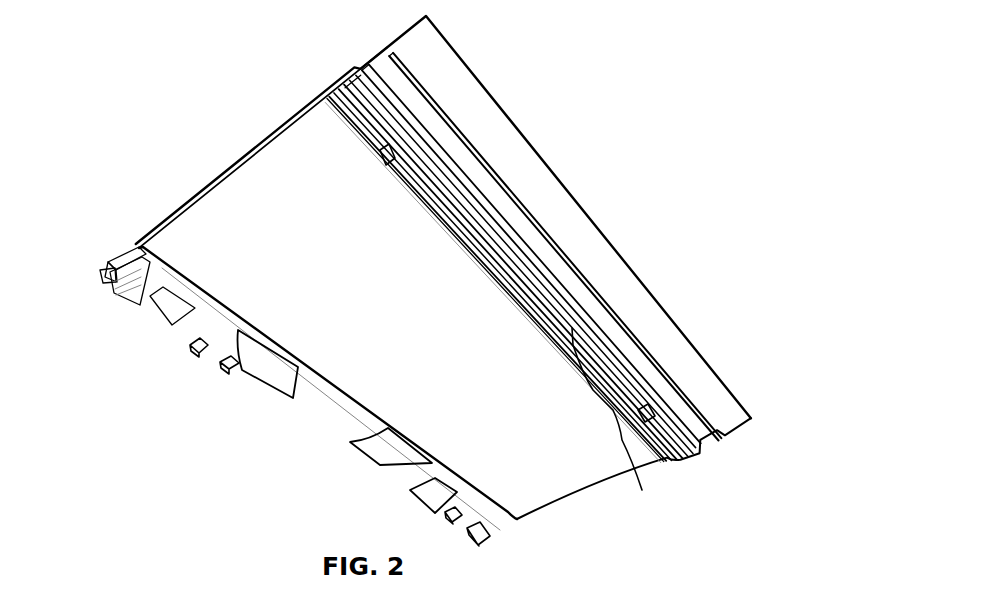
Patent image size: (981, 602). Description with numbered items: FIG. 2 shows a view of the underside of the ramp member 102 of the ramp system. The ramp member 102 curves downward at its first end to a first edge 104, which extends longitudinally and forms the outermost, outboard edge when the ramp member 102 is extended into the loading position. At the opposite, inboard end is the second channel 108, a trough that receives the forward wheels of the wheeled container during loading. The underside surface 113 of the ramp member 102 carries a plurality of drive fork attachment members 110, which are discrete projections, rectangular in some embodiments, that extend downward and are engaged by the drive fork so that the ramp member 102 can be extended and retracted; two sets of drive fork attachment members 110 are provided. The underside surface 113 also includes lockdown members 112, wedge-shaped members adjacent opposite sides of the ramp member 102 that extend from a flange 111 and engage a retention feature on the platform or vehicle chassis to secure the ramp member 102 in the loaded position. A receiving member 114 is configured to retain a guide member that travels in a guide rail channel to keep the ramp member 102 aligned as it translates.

The ramp member 102 is at (206, 148).
The first edge 104 is at (478, 78).
The second channel 108 is at (128, 254).
The drive fork attachment members 110 is at (193, 354).
The flange 111 is at (617, 425).
The lockdown members 112 is at (388, 152).
The underside surface 113 is at (330, 258).
The receiving member 114 is at (132, 306).